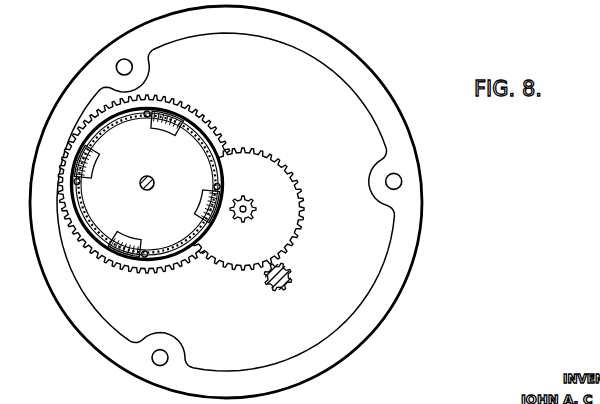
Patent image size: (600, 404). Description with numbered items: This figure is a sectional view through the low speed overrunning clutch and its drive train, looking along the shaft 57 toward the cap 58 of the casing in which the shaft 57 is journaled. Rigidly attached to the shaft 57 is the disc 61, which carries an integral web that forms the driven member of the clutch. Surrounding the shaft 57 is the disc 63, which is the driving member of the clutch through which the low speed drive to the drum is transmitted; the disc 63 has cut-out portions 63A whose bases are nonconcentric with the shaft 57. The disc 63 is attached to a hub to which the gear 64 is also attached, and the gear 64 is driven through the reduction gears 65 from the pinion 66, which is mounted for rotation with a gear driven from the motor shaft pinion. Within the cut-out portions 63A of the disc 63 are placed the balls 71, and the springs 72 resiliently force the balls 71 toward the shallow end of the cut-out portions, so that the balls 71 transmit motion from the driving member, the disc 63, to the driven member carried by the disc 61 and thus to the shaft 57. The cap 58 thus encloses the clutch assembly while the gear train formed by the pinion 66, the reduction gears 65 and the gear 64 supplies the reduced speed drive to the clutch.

The cap 58 is at (372, 83).
The disc 61 is at (147, 192).
The gear 64 is at (206, 111).
The disc 63 is at (207, 144).
The cut-out portions 63A is at (163, 134).
The reduction gears 65 is at (294, 177).
The pinion 66 is at (290, 269).
The balls 71 is at (88, 183).
The springs 72 is at (139, 244).
The shaft 57 is at (154, 183).